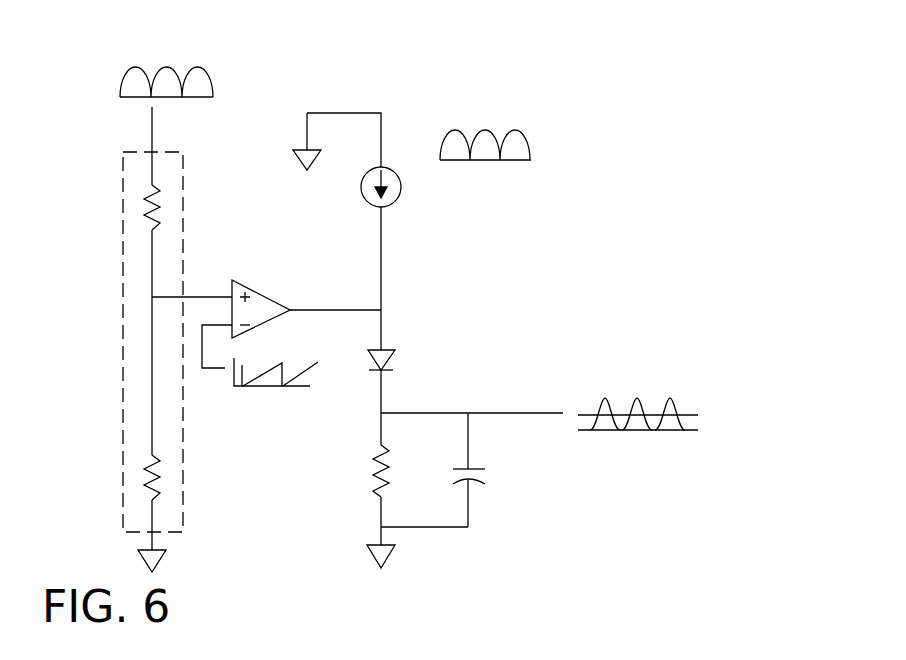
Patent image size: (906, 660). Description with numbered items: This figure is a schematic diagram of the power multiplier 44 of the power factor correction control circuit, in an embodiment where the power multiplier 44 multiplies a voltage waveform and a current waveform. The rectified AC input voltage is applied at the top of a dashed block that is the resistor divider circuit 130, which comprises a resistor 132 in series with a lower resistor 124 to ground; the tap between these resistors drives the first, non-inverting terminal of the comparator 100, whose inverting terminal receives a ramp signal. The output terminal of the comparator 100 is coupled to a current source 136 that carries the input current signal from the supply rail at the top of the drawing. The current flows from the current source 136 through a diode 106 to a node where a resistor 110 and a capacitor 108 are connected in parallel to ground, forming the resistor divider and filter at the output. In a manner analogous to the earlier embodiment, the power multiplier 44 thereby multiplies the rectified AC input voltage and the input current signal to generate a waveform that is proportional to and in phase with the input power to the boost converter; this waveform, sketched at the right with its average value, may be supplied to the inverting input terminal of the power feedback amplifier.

The power multiplier 44 is at (548, 61).
The comparator 100 is at (262, 284).
The diode 106 is at (395, 363).
The capacitor 108 is at (478, 483).
The resistor 110 is at (376, 470).
The resistor 124 is at (150, 490).
The resistor divider circuit 130 is at (185, 253).
The resistor 132 is at (150, 220).
The current source 136 is at (397, 196).